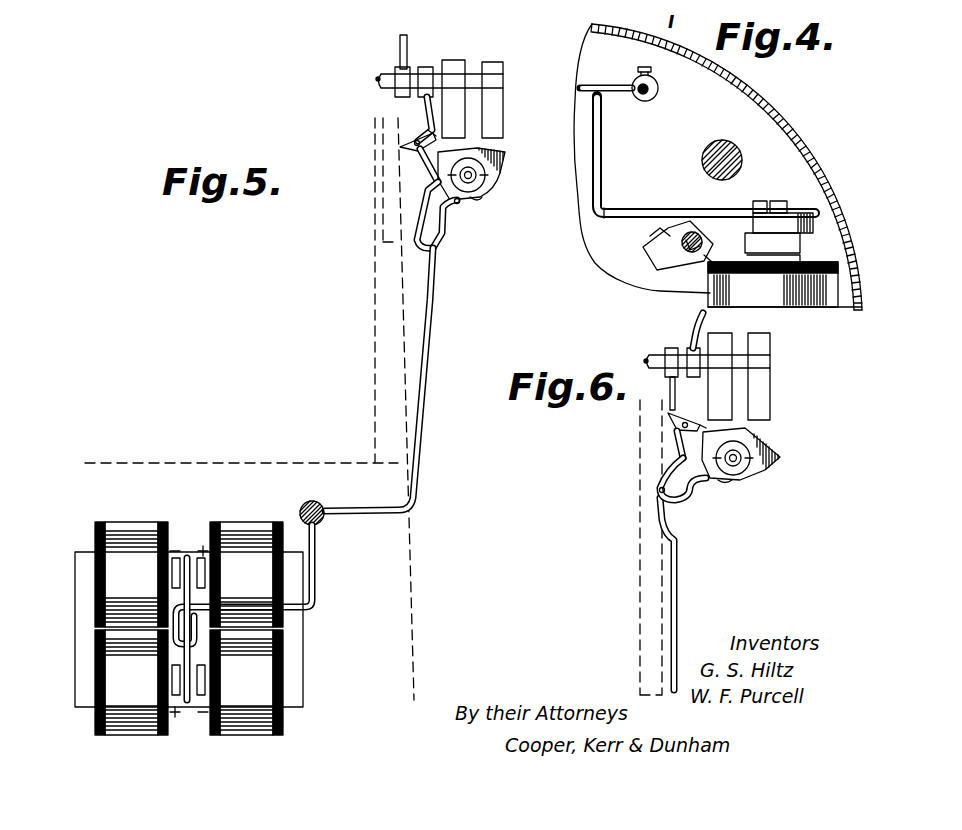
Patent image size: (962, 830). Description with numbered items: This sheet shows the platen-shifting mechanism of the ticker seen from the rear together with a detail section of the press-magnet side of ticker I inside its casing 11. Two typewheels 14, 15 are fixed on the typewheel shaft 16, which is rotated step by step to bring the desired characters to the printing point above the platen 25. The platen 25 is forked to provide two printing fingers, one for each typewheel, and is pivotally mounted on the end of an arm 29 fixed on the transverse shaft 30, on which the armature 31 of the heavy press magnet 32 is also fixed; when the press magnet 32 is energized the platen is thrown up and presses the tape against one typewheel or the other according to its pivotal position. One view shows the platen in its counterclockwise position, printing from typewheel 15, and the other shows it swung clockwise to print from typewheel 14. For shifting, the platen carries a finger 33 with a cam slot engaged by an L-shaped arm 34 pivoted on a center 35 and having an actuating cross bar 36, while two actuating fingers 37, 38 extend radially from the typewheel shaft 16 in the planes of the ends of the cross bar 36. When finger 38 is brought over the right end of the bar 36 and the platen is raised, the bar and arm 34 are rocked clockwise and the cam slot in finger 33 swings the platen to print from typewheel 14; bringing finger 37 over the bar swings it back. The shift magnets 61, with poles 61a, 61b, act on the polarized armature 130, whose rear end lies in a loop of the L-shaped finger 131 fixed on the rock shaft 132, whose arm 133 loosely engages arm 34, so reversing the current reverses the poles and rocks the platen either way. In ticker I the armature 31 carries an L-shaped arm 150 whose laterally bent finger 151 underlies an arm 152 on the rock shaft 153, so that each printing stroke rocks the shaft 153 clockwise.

In FIG. 4, the casing 11 is at (788, 121).
In FIG. 5, the typewheel 14 is at (457, 52).
In FIG. 6, the typewheel 14 is at (720, 340).
In FIG. 5, the typewheel 15 is at (494, 63).
In FIG. 6, the typewheel 15 is at (763, 343).
In FIG. 5, the typewheel shaft 16 is at (388, 77).
In FIG. 6, the typewheel shaft 16 is at (654, 358).
In FIG. 5, the platen 25 is at (500, 172).
In FIG. 6, the platen 25 is at (781, 466).
In FIG. 5, the arm 29 is at (476, 199).
In FIG. 6, the arm 29 is at (723, 482).
In FIG. 4, the transverse shaft 30 is at (693, 232).
In FIG. 4, the armature 31 is at (800, 232).
In FIG. 4, the press magnet 32 is at (773, 284).
In FIG. 5, the finger 33 is at (440, 248).
In FIG. 6, the finger 33 is at (660, 488).
In FIG. 5, the L-shaped arm 34 is at (423, 160).
In FIG. 6, the L-shaped arm 34 is at (677, 445).
In FIG. 5, the center 35 is at (410, 137).
In FIG. 6, the center 35 is at (677, 425).
In FIG. 5, the actuating cross bar 36 is at (428, 133).
In FIG. 6, the actuating cross bar 36 is at (702, 427).
In FIG. 5, the actuating finger 37 is at (400, 43).
In FIG. 6, the actuating finger 37 is at (676, 395).
In FIG. 5, the actuating finger 38 is at (433, 111).
In FIG. 6, the actuating finger 38 is at (692, 343).
In FIG. 5, the shift magnets 61 is at (306, 638).
In FIG. 5, the poles 61a is at (208, 570).
In FIG. 5, the poles 61b is at (172, 571).
In FIG. 5, the polarized armature 130 is at (188, 560).
In FIG. 5, the L-shaped finger 131 is at (317, 594).
In FIG. 5, the rock shaft 132 is at (320, 505).
In FIG. 5, the arm 133 is at (418, 453).
In FIG. 4, the L-shaped arm 150 is at (630, 214).
In FIG. 4, the finger 151 is at (603, 102).
In FIG. 4, the arm 152 is at (615, 74).
In FIG. 4, the rock shaft 153 is at (659, 89).